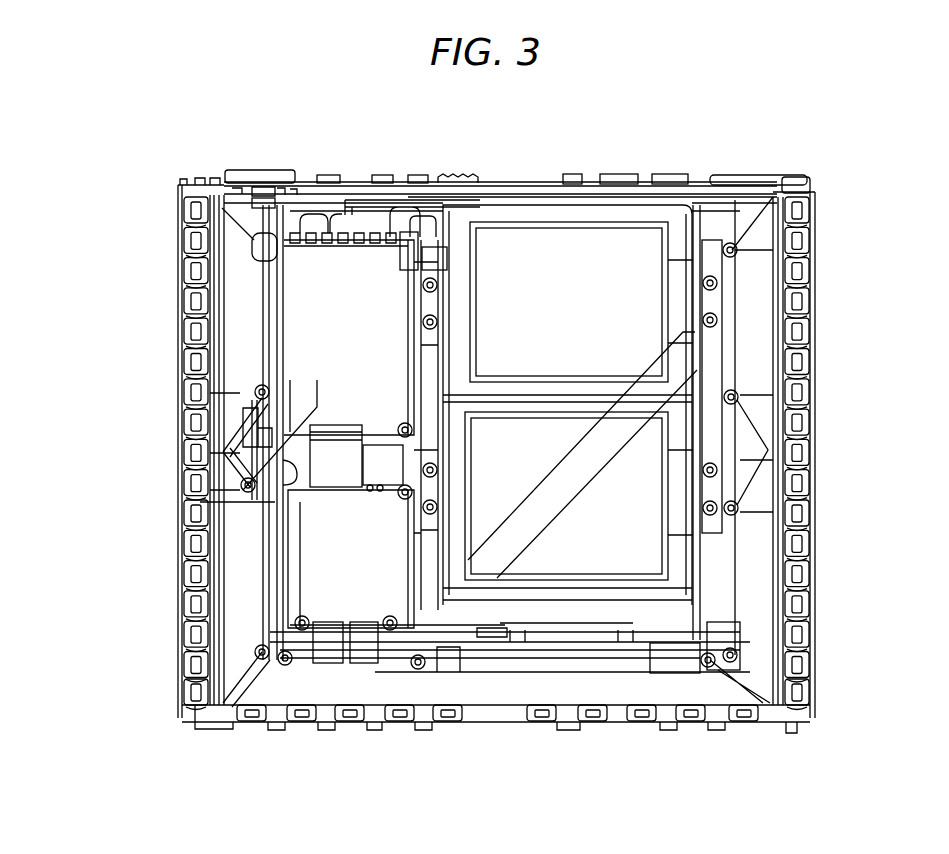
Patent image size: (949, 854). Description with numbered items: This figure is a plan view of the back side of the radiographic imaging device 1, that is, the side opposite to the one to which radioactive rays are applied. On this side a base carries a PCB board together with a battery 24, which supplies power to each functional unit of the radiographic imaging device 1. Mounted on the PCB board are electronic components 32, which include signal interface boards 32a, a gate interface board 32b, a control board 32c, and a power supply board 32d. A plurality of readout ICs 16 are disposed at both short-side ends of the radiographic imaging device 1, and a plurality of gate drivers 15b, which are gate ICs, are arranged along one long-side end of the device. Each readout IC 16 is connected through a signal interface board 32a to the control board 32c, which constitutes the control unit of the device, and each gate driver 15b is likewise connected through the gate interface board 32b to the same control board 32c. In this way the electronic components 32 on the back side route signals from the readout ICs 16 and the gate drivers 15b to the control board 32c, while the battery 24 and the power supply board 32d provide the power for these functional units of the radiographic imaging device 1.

The radiographic imaging device 1 is at (842, 201).
The battery 24 is at (532, 250).
The electronic components 32 is at (501, 480).
The signal interface board 32a is at (237, 345).
The gate interface board 32b is at (327, 690).
The control board 32c is at (300, 557).
The power supply board 32d is at (300, 297).
The readout IC 16 is at (178, 430).
The gate driver 15b is at (405, 727).